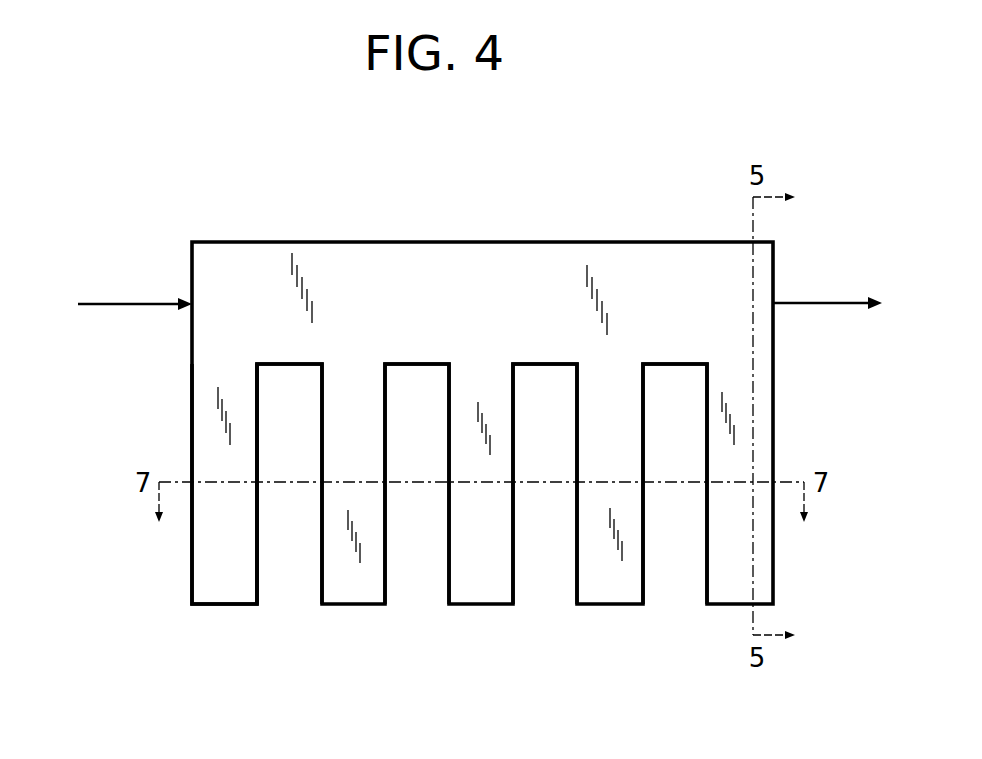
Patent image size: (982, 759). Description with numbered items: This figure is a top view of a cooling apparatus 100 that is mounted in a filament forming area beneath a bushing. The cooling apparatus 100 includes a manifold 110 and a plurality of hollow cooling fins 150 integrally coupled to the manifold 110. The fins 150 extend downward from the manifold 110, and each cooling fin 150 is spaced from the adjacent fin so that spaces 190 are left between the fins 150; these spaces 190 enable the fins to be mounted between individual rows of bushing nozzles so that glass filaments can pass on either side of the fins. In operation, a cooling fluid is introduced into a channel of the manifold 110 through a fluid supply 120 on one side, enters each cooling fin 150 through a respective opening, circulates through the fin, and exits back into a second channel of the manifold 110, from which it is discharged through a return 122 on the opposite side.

The cooling apparatus 100 is at (570, 209).
The manifold 110 is at (413, 268).
The fluid supply 120 is at (122, 302).
The return 122 is at (822, 303).
The cooling fin 150 is at (214, 543).
The spaces 190 is at (417, 575).